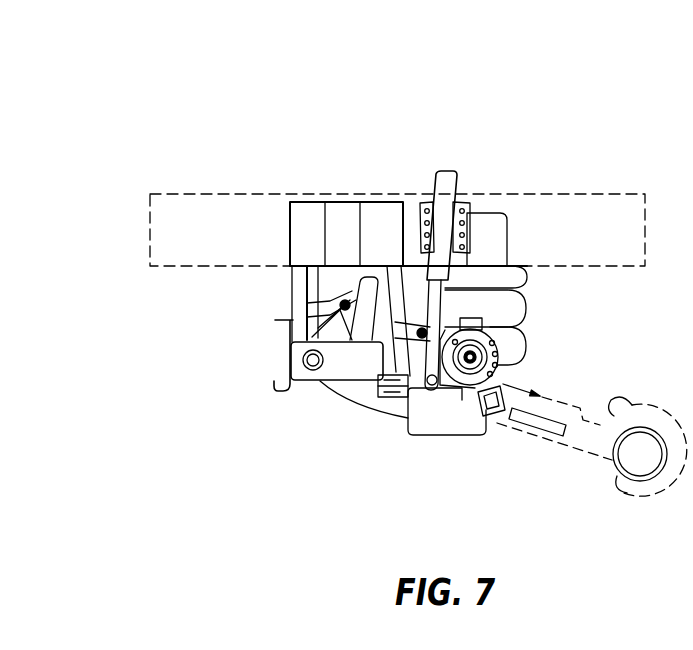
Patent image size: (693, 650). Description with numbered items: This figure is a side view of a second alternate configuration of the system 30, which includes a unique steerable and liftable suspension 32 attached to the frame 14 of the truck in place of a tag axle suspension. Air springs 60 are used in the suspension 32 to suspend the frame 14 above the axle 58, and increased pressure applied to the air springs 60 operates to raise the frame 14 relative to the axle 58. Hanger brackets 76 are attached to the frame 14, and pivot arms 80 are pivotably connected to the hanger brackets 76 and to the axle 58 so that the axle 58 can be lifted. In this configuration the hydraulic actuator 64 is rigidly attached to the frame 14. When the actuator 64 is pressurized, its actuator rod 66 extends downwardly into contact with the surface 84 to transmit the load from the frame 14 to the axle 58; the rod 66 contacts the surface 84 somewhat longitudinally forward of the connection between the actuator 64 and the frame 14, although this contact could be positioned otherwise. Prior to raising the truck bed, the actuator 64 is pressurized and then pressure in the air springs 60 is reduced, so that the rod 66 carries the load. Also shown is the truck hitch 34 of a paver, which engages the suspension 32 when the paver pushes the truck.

The frame 14 is at (173, 194).
The system 30 is at (478, 113).
The hydraulic actuator 64 is at (458, 182).
The actuator rod 66 is at (527, 283).
The air springs 60 is at (527, 313).
The steerable and liftable suspension 32 is at (540, 350).
The hanger brackets 76 is at (292, 284).
The pivot arms 80 is at (327, 378).
The surface 84 is at (383, 388).
The axle 58 is at (452, 437).
The truck hitch 34 is at (596, 466).